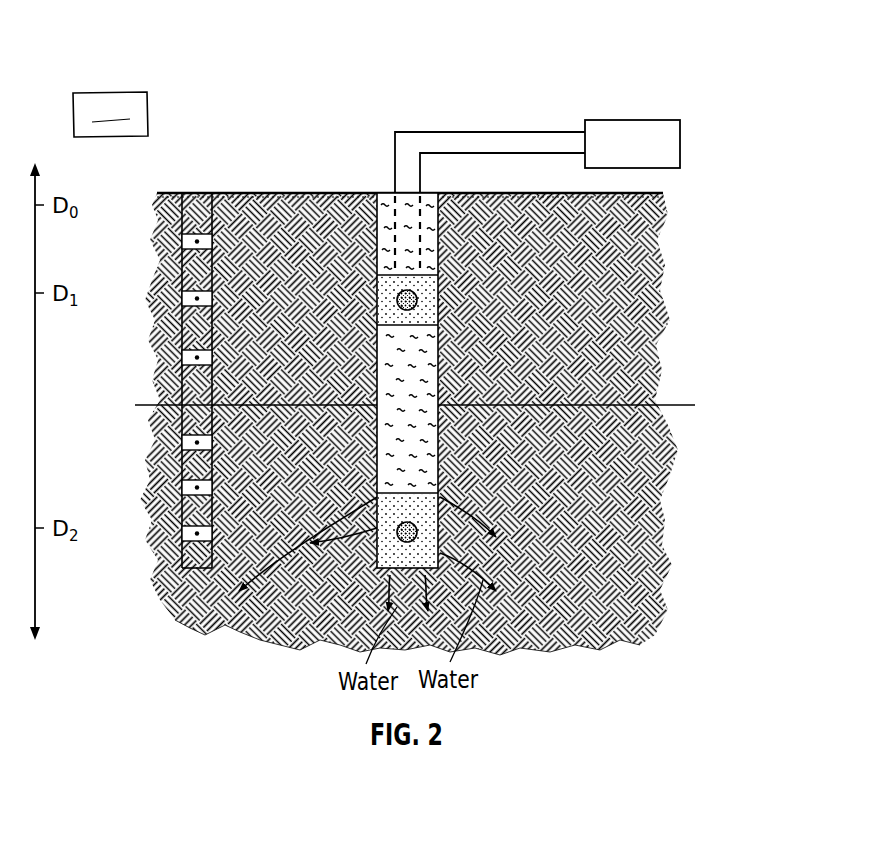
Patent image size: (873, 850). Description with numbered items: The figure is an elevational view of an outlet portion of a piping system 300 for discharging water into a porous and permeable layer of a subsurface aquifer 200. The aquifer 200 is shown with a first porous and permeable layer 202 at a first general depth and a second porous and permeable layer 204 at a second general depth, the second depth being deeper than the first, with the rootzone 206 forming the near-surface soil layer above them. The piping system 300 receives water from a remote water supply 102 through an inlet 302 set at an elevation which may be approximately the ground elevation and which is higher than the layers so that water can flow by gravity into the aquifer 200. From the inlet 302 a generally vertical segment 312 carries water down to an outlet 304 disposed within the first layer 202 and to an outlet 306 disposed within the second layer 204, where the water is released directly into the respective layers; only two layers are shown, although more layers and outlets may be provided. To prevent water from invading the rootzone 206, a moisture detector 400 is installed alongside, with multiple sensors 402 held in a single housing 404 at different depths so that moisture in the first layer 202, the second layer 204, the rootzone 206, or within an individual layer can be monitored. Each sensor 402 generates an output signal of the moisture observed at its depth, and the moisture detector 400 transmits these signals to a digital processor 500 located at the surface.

The water supply 102 is at (682, 140).
The subsurface aquifer 200 is at (727, 515).
The first porous and permeable layer 202 is at (625, 305).
The second porous and permeable layer 204 is at (668, 550).
The rootzone 206 is at (660, 207).
The piping system 300 is at (434, 107).
The inlet 302 is at (564, 131).
The outlet 304 is at (416, 298).
The outlet 306 is at (416, 533).
The vertical segments 312 is at (440, 450).
The moisture detector 400 is at (201, 182).
The sensors 402 is at (180, 238).
The housing 404 is at (150, 342).
The digital processor 500 is at (187, 186).